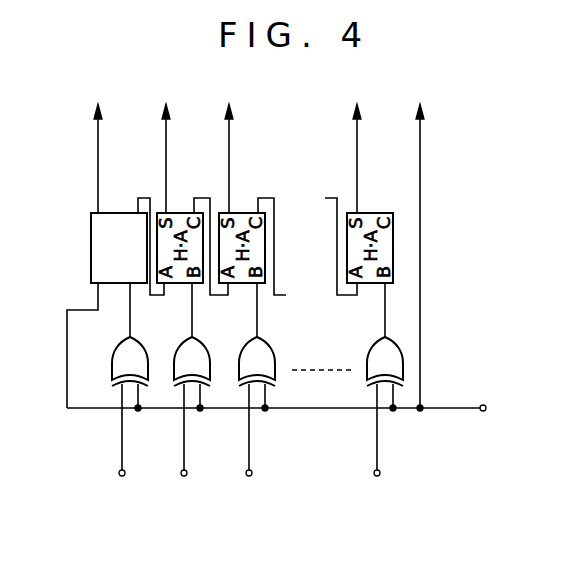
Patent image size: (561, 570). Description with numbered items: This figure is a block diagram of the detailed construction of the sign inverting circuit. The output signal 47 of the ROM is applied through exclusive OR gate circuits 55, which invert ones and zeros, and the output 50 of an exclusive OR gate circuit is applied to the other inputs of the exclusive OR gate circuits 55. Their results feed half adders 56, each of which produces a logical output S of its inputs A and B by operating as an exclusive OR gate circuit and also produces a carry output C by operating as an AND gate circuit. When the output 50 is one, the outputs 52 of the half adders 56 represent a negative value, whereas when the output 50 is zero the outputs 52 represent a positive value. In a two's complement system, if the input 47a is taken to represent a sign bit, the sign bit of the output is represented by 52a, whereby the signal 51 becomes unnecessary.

The output signal of ROM 47 is at (100, 495).
The input 47a is at (378, 456).
The output of the exclusive OR gate circuit 50 is at (448, 407).
The signal 51 is at (421, 170).
The outputs of the half adder 52 is at (86, 111).
The sign bit of the output 52a is at (359, 170).
The exclusive OR gate circuit 55 is at (118, 360).
The half adder 56 is at (91, 236).